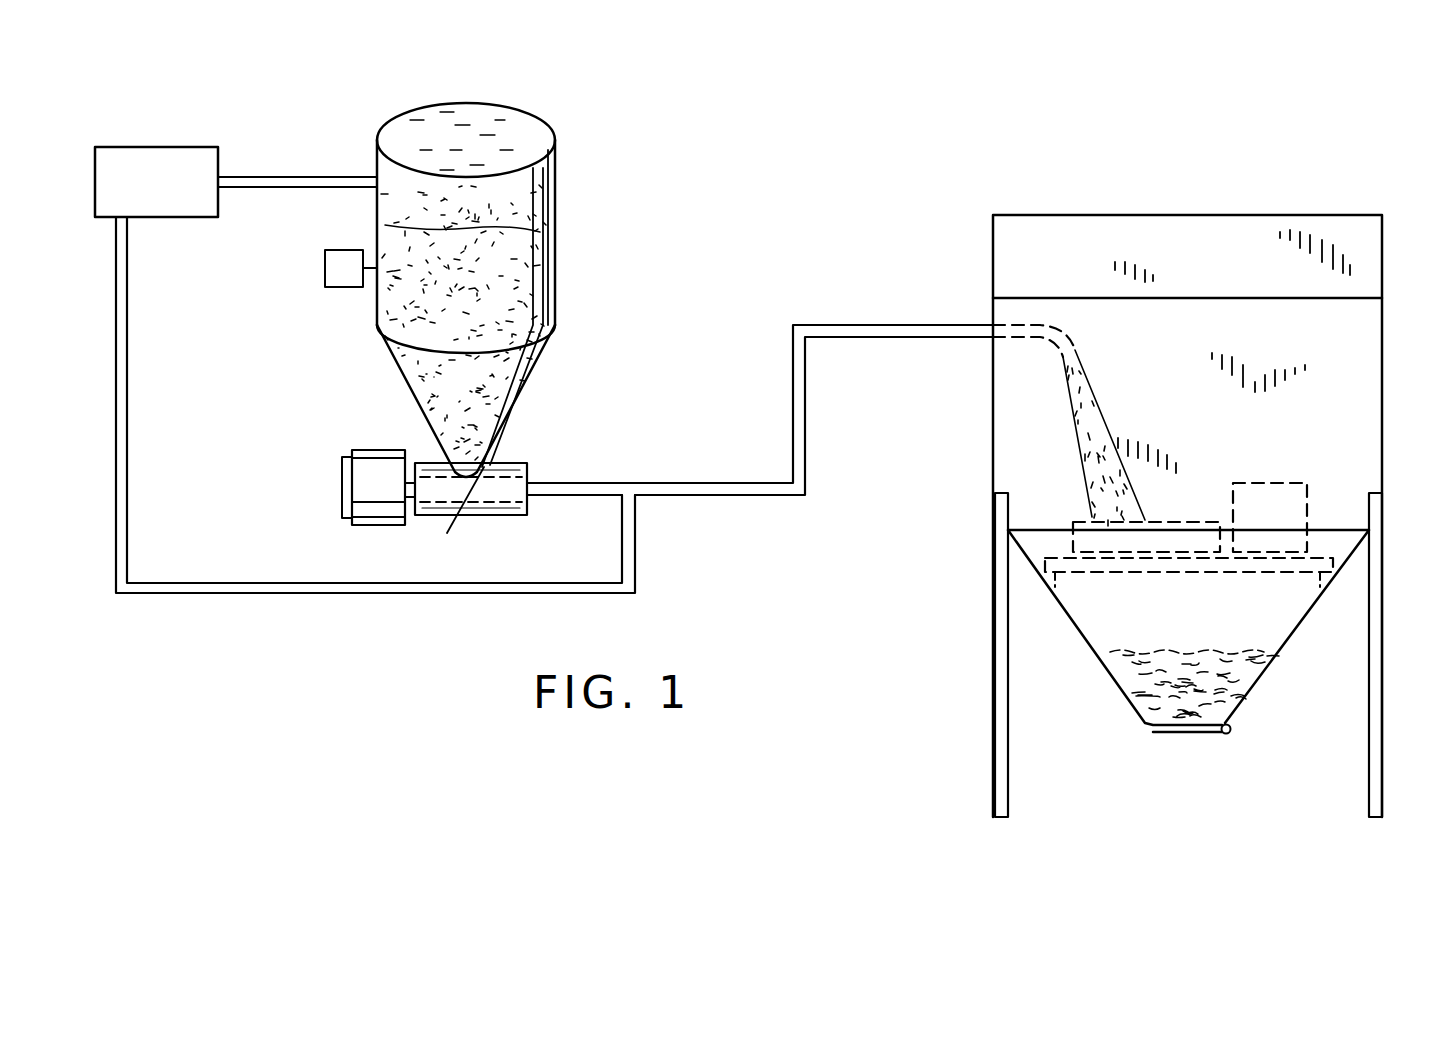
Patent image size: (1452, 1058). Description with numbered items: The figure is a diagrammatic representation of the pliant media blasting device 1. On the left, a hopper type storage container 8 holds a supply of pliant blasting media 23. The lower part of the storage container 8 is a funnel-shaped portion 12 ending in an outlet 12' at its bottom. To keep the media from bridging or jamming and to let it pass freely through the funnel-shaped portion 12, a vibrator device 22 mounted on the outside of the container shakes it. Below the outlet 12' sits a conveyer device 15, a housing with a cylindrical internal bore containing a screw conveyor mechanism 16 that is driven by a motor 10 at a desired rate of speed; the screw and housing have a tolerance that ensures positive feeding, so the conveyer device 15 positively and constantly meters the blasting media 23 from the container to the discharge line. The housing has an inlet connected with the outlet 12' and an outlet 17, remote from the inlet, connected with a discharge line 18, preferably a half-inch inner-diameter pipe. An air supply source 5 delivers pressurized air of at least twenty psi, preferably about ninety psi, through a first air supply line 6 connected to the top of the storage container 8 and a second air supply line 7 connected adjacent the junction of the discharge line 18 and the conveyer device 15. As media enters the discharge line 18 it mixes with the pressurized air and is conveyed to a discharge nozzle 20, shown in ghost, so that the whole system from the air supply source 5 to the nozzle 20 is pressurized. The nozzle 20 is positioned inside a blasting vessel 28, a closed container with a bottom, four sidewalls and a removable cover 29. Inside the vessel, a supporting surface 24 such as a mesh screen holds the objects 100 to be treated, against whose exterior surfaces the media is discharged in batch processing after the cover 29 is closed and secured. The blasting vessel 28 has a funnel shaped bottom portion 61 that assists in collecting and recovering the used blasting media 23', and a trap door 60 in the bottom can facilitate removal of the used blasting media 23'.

The pliant media blasting device 1 is at (605, 167).
The air supply source 5 is at (135, 148).
The first air supply line 6 is at (318, 177).
The second air supply line 7 is at (275, 594).
The storage container 8 is at (552, 256).
The motor 10 is at (378, 450).
The funnel-shaped portion 12 is at (548, 308).
The outlet 12' is at (454, 518).
The conveyer device 15 is at (523, 465).
The screw conveyor mechanism 16 is at (507, 492).
The outlet 17 is at (530, 484).
The discharge line 18 is at (690, 497).
The discharge nozzle 20 is at (1045, 344).
The vibrator device 22 is at (323, 264).
The blasting media 23 is at (460, 272).
The used blasting media 23' is at (1107, 744).
The supporting surface 24 is at (1323, 547).
The blasting vessel 28 is at (1383, 352).
The removable cover 29 is at (1097, 215).
The trap door 60 is at (1196, 734).
The funnel shaped bottom portion 61 is at (1270, 665).
The objects 100 is at (1307, 500).